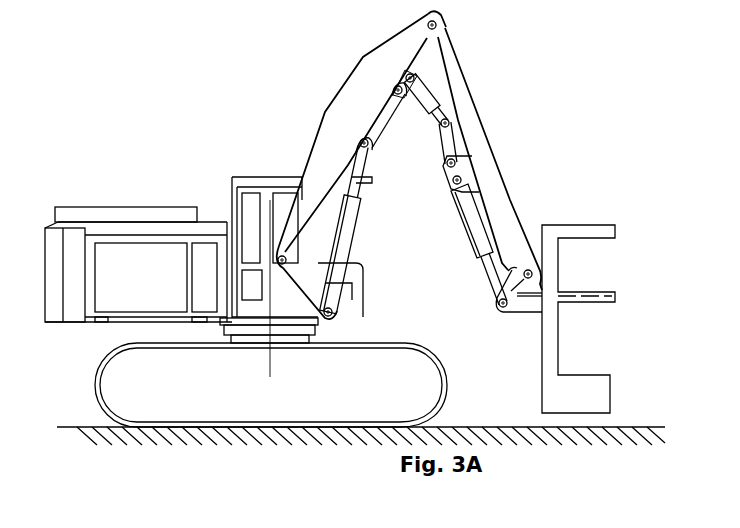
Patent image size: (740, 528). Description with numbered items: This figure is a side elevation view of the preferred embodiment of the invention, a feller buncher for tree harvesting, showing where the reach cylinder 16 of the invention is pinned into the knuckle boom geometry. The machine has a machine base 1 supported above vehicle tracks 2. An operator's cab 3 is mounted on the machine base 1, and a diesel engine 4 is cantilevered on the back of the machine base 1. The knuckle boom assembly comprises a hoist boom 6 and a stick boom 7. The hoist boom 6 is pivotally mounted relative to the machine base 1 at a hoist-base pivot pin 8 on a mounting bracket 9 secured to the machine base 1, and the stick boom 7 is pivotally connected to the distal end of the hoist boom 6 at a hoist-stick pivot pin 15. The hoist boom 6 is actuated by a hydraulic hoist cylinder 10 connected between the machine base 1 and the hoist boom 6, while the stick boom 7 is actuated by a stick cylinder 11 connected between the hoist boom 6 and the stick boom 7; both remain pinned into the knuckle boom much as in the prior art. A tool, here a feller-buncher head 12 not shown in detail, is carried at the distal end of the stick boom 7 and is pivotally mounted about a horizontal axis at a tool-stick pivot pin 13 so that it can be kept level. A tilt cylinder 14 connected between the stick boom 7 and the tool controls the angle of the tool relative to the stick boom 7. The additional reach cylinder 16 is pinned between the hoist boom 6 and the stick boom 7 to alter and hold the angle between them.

The machine base 1 is at (108, 318).
The vehicle tracks 2 is at (95, 385).
The operator's cab 3 is at (290, 176).
The diesel engine 4 is at (120, 265).
The hoist boom 6 is at (342, 113).
The stick boom 7 is at (482, 132).
The hoist-base pivot pin 8 is at (233, 297).
The mounting bracket 9 is at (260, 307).
The hydraulic hoist cylinder 10 is at (347, 260).
The stick cylinder 11 is at (438, 152).
The feller-buncher head 12 is at (610, 392).
The tool-stick pivot pin 13 is at (527, 264).
The tilt cylinder 14 is at (468, 222).
The hoist-stick pivot pin 15 is at (412, 18).
The reach cylinder 16 is at (430, 88).